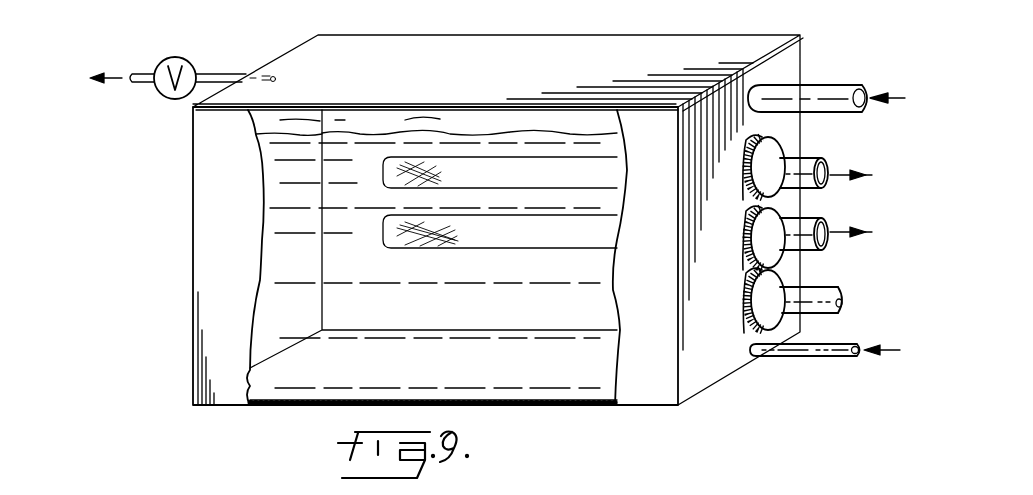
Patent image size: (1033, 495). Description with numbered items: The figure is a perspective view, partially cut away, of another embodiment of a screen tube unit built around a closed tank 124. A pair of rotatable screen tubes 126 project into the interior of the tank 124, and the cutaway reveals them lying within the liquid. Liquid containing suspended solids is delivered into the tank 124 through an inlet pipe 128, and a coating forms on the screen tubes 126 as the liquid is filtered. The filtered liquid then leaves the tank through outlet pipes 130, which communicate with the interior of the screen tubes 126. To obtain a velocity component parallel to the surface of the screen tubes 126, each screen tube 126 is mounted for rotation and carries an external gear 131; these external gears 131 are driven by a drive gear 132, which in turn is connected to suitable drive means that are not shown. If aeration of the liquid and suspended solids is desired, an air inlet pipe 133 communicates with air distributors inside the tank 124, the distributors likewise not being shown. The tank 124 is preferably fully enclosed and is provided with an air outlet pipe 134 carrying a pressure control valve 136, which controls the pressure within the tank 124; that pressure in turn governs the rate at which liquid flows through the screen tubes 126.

The closed tank 124 is at (193, 263).
The rotatable screen tubes 126 is at (393, 225).
The inlet pipe 128 is at (818, 88).
The outlet pipes 130 is at (806, 222).
The external gear 131 is at (754, 205).
The drive gear 132 is at (782, 347).
The air inlet pipe 133 is at (797, 357).
The air outlet pipe 134 is at (210, 75).
The pressure control valve 136 is at (175, 57).